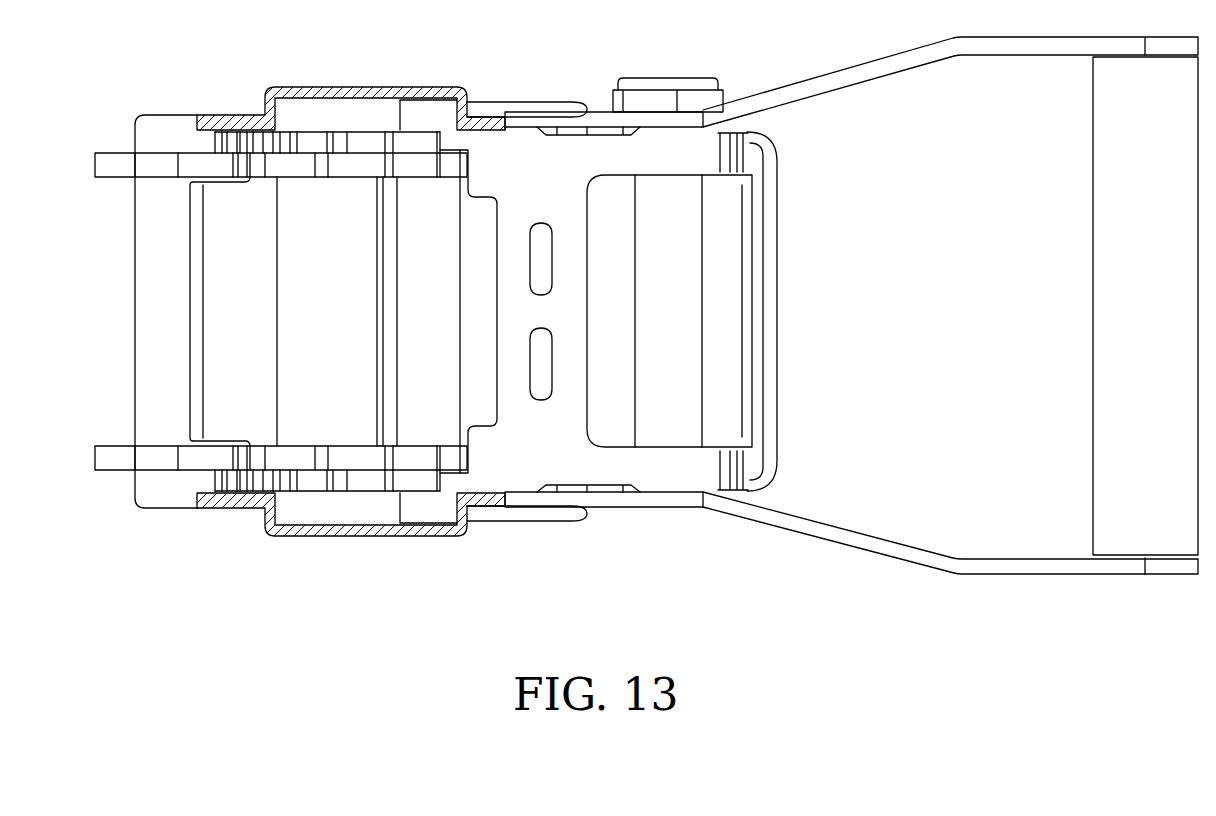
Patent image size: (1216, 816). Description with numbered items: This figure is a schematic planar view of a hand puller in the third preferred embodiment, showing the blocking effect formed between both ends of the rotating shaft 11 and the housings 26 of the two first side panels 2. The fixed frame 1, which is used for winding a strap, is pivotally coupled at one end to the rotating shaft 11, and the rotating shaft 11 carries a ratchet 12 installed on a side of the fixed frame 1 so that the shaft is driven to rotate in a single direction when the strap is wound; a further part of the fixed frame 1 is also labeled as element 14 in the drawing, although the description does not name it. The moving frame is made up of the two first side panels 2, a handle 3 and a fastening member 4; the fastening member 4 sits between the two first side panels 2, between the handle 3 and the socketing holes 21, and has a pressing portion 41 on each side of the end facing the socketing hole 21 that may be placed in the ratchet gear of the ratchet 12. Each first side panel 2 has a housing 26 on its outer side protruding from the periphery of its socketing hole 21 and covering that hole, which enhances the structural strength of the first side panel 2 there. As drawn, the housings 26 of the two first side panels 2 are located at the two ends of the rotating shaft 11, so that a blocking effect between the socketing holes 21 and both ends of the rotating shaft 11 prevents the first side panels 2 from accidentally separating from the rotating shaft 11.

The fixed frame 1 is at (132, 308).
The first side panel 2 is at (780, 92).
The handle 3 is at (1091, 308).
The fastening member 4 is at (575, 308).
The rotating shaft 11 is at (307, 295).
The ratchet 12 is at (242, 140).
The flange 14 is at (147, 160).
The socketing hole 21 is at (433, 118).
The housing 26 is at (407, 86).
The pressing portion 41 is at (445, 143).